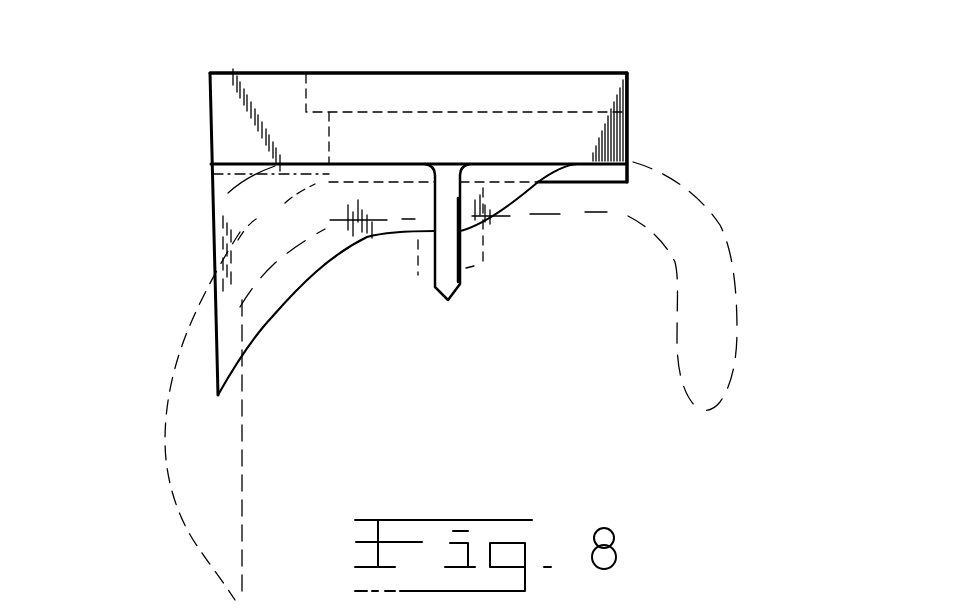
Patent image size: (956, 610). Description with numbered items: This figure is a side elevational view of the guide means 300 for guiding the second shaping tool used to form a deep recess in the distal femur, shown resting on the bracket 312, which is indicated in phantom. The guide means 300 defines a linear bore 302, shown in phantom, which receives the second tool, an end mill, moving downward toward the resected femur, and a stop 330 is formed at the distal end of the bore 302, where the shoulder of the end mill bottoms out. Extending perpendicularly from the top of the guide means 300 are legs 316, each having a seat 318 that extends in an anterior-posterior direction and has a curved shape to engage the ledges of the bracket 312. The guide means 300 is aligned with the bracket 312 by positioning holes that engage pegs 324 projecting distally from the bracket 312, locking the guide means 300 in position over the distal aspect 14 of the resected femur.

The distal aspect 14 is at (597, 72).
The guide means 300 is at (188, 136).
The linear bore 302 is at (547, 138).
The bracket 312 is at (751, 295).
The legs 316 is at (230, 328).
The seats 318 is at (275, 313).
The pegs 324 is at (473, 267).
The stop 330 is at (343, 88).